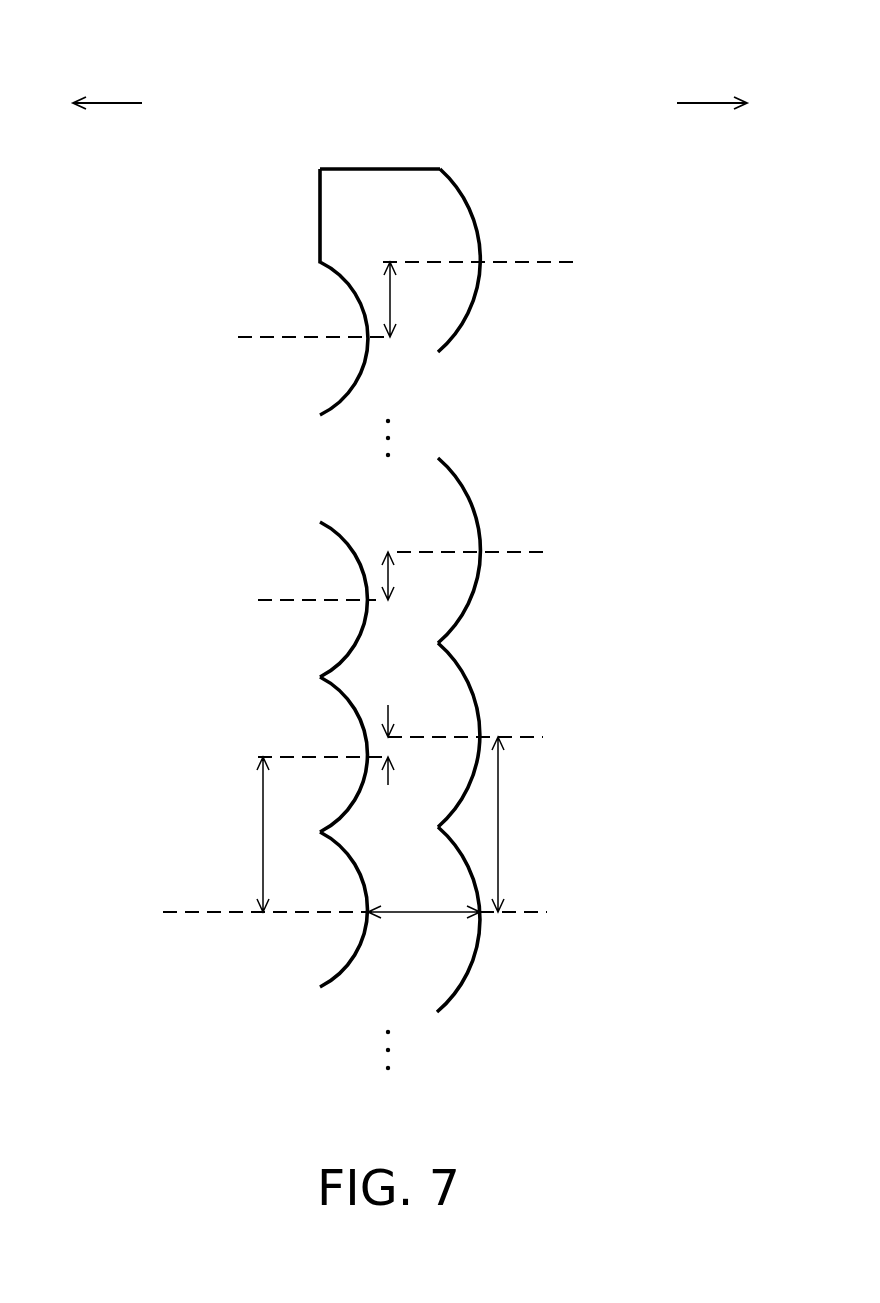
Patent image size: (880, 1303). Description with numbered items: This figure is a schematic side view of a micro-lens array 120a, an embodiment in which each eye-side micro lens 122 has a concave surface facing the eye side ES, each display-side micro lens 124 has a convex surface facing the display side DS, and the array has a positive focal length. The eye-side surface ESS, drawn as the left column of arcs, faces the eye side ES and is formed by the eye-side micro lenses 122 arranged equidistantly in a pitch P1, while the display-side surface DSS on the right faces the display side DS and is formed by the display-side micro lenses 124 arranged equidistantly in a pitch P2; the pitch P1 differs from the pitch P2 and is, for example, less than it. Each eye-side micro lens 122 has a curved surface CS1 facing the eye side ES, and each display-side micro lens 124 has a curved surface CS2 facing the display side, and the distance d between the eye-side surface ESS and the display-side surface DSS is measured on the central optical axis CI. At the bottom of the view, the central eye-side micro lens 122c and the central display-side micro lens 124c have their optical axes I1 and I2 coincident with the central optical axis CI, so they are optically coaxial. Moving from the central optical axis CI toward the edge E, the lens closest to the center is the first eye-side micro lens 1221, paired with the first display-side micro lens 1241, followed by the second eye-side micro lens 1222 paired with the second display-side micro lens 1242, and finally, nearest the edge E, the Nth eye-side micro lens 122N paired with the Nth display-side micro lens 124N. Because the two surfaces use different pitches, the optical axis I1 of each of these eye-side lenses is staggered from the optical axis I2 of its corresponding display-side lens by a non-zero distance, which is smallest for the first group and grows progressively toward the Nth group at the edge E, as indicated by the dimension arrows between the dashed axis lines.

The eye-side micro lens 122 is at (295, 577).
The display-side micro lens 124 is at (540, 626).
The Nth eye-side micro lens 122N is at (345, 272).
The Nth display-side micro lens 124N is at (470, 224).
The second eye-side micro lens 1222 is at (335, 522).
The second display-side micro lens 1242 is at (457, 490).
The first eye-side micro lens 1221 is at (350, 693).
The first display-side micro lens 1241 is at (455, 672).
The central eye-side micro lens 122c is at (343, 983).
The central display-side micro lens 124c is at (462, 965).
The micro-lens array 120a is at (706, 1102).
The edge E is at (426, 155).
The display-side surface DSS is at (470, 180).
The eye-side surface ESS is at (322, 268).
The curved surface CS1 is at (318, 404).
The curved surface CS2 is at (475, 326).
The optical axis I1 is at (250, 338).
The optical axis I2 is at (567, 262).
The central optical axis CI is at (183, 912).
The eye side ES is at (107, 85).
The display side DS is at (712, 87).
The pitch P1 is at (249, 834).
The pitch P2 is at (513, 824).
The distance d is at (424, 896).